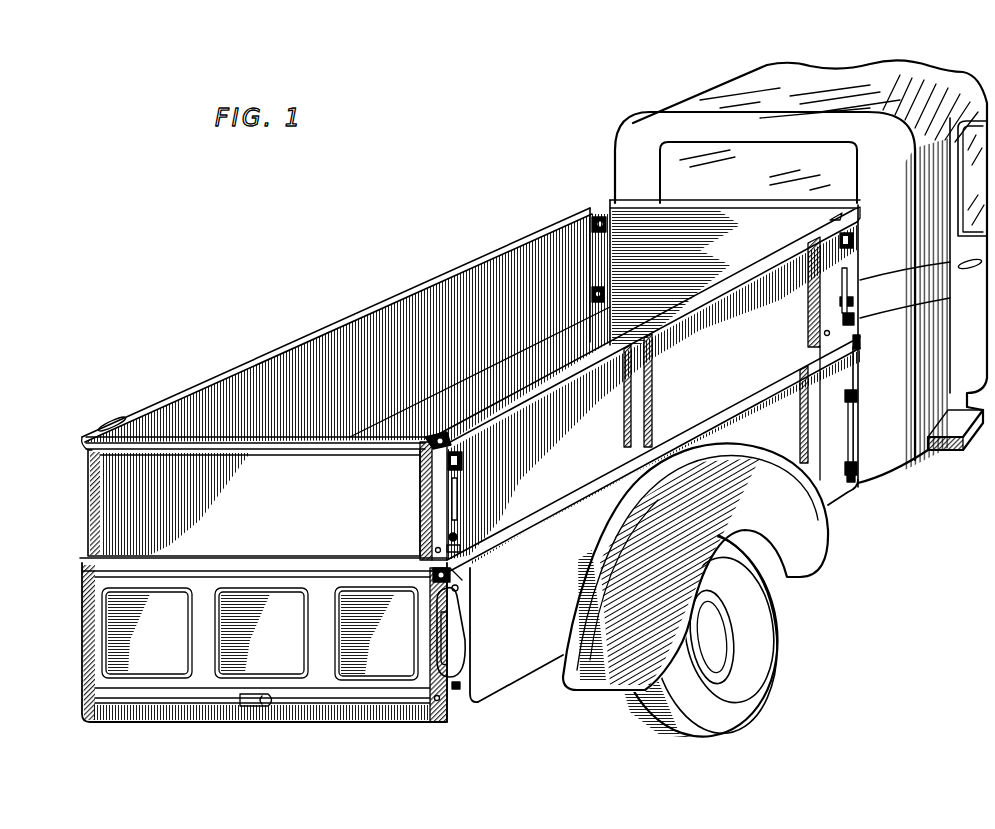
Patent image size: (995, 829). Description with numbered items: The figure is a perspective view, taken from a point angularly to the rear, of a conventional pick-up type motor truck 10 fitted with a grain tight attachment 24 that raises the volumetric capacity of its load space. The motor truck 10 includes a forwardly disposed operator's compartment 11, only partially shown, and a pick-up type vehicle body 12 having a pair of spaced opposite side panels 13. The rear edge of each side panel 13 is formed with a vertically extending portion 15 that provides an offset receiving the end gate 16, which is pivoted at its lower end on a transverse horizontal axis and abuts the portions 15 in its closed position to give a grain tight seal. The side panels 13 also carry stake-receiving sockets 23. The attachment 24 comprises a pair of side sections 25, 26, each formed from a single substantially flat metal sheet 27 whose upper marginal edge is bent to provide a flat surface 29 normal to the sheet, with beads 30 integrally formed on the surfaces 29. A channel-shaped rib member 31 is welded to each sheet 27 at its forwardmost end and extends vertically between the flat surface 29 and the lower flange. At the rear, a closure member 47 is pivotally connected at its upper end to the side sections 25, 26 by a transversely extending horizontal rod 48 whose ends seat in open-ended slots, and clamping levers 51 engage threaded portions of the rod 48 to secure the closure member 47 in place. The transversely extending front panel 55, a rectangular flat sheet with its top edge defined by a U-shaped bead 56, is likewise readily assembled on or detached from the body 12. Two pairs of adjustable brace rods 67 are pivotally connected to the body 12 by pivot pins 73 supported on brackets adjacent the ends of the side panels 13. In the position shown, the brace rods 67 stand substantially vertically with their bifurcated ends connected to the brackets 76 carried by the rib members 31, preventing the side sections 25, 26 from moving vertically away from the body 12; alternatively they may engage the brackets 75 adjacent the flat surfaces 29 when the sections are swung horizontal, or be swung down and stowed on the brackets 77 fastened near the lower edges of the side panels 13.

The motor truck 10 is at (530, 213).
The operator's compartment 11 is at (715, 100).
The vehicle body 12 is at (841, 574).
The side panels 13 is at (550, 646).
The vertically extending portion 15 is at (82, 652).
The end gate 16 is at (155, 660).
The stake-receiving sockets 23 is at (856, 340).
The grain tight attachment 24 is at (311, 368).
The side section 25 is at (225, 402).
The side section 26 is at (548, 469).
The metal sheet 27 is at (470, 282).
The flat surface 29 is at (160, 407).
The beads 30 is at (483, 437).
The channel-shaped rib member 31 is at (846, 262).
The closure member 47 is at (132, 490).
The horizontal rod 48 is at (423, 456).
The clamping levers 51 is at (432, 470).
The front panel 55 is at (740, 236).
The U-shaped bead 56 is at (613, 203).
The brace rods 67 is at (462, 638).
The pivot pin 73 is at (843, 398).
The brackets 75 is at (462, 471).
The bracket 76 is at (449, 537).
The brackets 77 is at (456, 690).